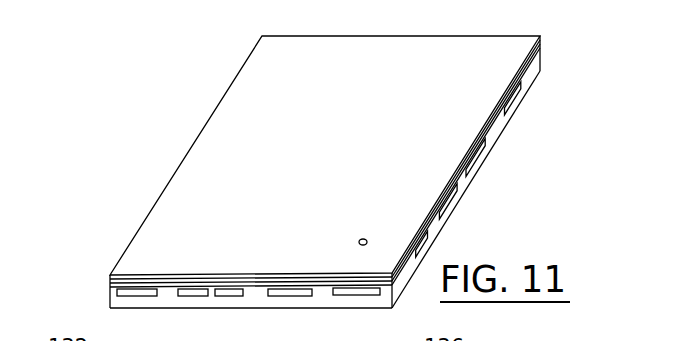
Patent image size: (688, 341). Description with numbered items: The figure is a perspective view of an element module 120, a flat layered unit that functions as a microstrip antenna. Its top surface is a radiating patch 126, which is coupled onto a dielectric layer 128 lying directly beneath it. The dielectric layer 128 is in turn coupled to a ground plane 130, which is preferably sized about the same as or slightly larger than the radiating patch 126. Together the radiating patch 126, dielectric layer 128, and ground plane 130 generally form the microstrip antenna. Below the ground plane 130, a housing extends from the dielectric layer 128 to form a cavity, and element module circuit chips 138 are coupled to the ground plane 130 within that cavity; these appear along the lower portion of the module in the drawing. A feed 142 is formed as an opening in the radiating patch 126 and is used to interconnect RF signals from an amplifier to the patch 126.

The element module 120 is at (262, 46).
The radiating patch 126 is at (110, 277).
The dielectric layer 128 is at (110, 282).
The ground plane 130 is at (110, 286).
The element module circuit chips 138 is at (149, 296).
The feed 142 is at (367, 241).